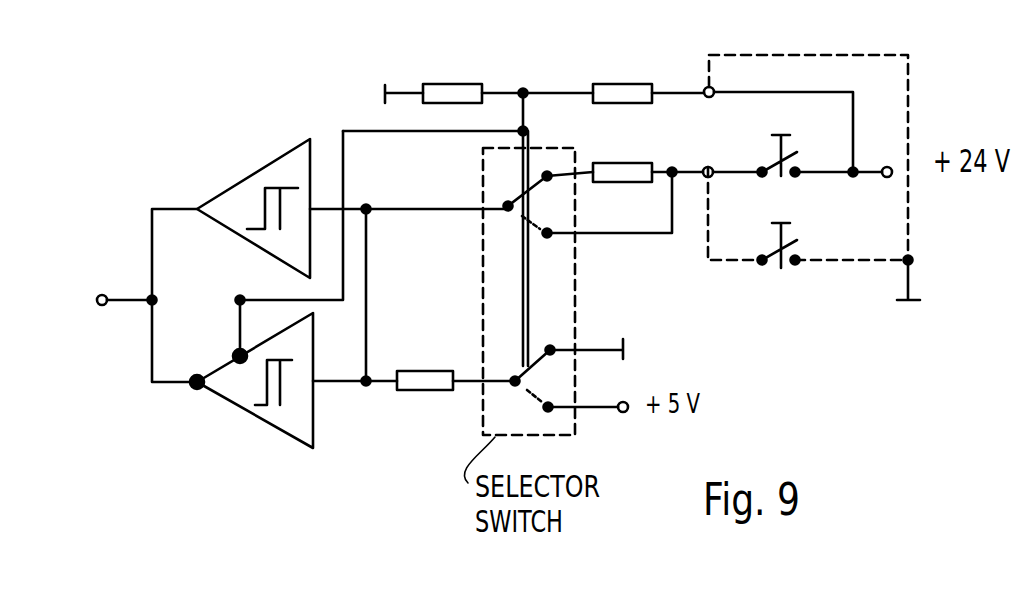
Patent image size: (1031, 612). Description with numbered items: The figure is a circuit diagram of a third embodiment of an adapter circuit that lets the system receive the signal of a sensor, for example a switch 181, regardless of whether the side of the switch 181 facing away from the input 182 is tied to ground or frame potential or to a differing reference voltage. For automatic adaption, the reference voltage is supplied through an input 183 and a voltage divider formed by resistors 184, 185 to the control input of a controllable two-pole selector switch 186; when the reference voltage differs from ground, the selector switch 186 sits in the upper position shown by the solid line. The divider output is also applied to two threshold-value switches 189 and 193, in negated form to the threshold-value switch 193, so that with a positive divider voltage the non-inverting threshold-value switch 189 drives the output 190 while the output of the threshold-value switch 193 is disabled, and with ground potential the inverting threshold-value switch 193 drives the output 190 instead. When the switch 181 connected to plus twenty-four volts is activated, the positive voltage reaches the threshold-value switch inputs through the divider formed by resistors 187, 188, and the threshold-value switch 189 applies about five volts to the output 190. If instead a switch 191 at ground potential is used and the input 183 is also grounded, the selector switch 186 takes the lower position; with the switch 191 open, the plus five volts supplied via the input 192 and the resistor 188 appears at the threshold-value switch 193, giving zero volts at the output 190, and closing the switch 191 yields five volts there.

The switch 181 is at (783, 171).
The input 182 is at (722, 152).
The input 183 is at (706, 87).
The voltage divider resistor 184 is at (633, 62).
The voltage divider resistor 185 is at (453, 58).
The controllable two-pole selector switch 186 is at (515, 204).
The resistor 187 is at (633, 164).
The resistor 188 is at (420, 370).
The threshold-value switch 189 is at (243, 185).
The output 190 is at (128, 265).
The switch 191 is at (783, 263).
The input 192 is at (625, 412).
The threshold-value switch 193 is at (232, 393).